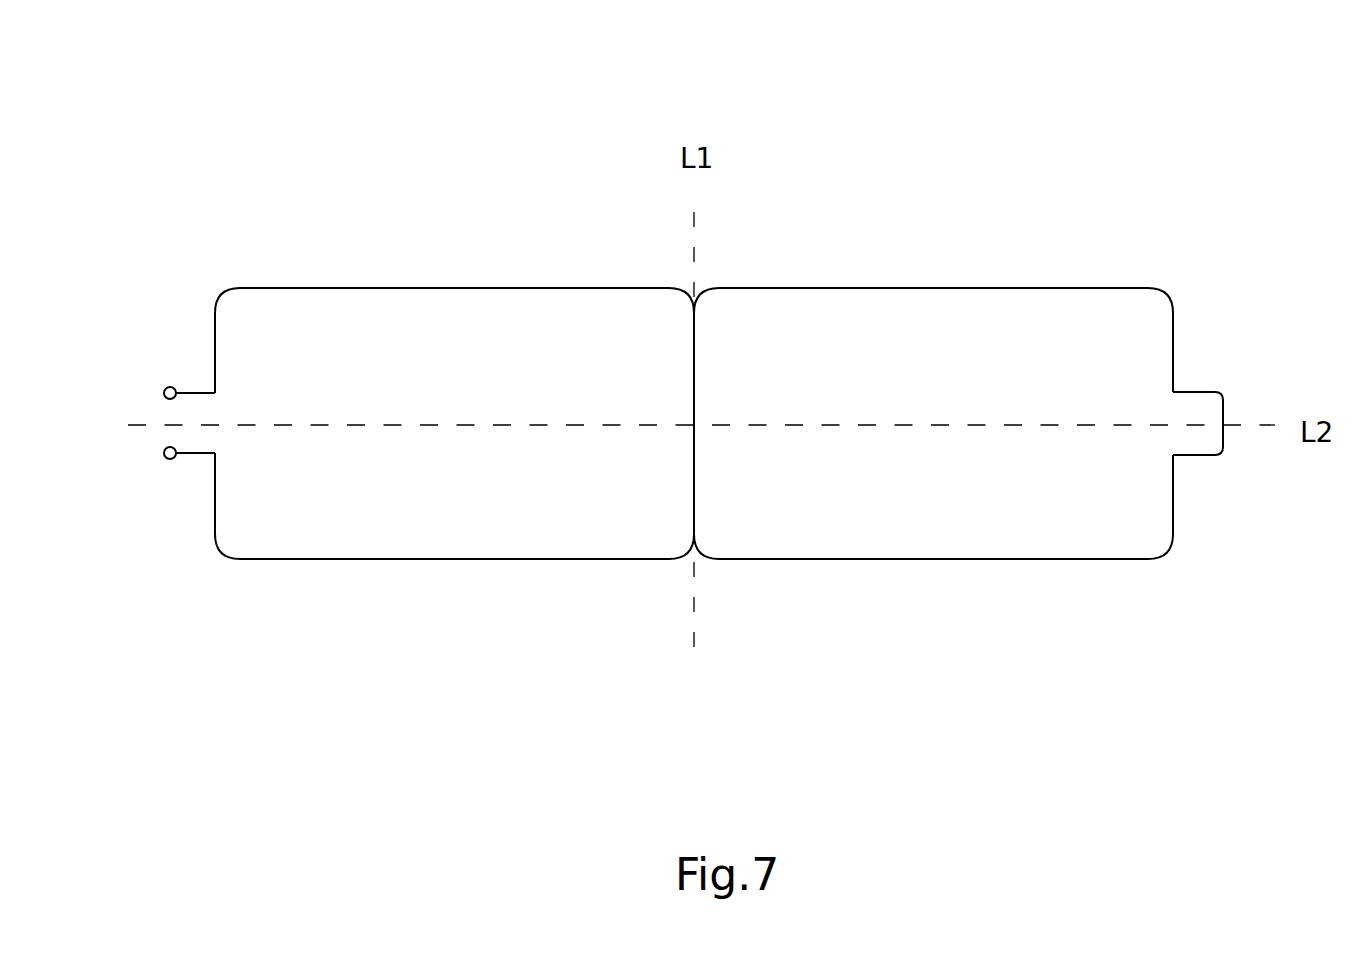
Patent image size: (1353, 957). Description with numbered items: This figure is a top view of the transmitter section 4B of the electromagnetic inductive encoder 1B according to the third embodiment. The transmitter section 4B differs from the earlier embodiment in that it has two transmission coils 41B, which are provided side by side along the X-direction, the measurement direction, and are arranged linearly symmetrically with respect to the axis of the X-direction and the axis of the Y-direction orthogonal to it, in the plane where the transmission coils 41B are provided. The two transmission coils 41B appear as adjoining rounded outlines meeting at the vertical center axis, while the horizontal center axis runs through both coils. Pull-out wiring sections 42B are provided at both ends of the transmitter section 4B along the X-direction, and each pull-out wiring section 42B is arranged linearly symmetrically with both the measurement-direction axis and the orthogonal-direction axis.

The electromagnetic inductive encoder 1B is at (957, 120).
The transmitter section 4B is at (1073, 248).
The transmission coil 41B is at (383, 287).
The pull-out wiring section 42B is at (203, 389).